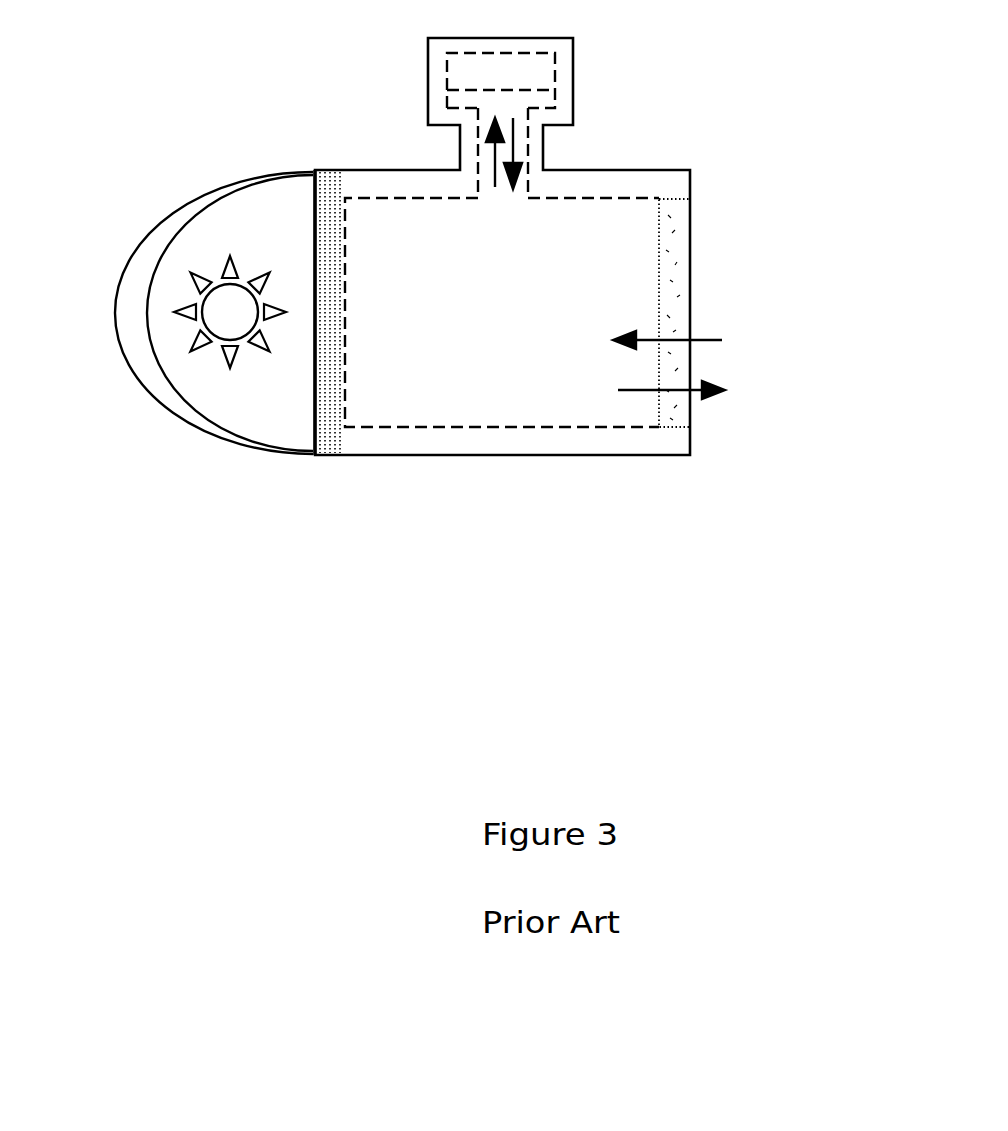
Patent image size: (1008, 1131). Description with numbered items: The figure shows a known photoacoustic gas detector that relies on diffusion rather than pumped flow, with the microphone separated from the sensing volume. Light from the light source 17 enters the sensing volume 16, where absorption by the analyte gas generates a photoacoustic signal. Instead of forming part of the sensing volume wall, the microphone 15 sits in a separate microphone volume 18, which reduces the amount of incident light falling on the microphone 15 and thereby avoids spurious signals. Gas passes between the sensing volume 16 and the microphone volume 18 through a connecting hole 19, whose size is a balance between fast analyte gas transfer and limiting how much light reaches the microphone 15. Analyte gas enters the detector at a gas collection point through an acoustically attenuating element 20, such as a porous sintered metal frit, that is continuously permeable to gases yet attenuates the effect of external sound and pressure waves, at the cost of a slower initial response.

The microphone 15 is at (477, 70).
The sensing volume 16 is at (471, 346).
The light source 17 is at (227, 305).
The microphone volume 18 is at (553, 90).
The connecting hole 19 is at (525, 143).
The acoustically attenuating element 20 is at (680, 310).